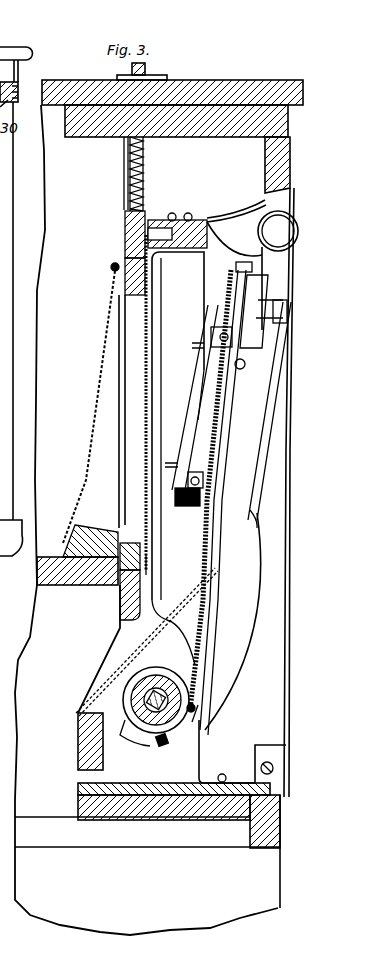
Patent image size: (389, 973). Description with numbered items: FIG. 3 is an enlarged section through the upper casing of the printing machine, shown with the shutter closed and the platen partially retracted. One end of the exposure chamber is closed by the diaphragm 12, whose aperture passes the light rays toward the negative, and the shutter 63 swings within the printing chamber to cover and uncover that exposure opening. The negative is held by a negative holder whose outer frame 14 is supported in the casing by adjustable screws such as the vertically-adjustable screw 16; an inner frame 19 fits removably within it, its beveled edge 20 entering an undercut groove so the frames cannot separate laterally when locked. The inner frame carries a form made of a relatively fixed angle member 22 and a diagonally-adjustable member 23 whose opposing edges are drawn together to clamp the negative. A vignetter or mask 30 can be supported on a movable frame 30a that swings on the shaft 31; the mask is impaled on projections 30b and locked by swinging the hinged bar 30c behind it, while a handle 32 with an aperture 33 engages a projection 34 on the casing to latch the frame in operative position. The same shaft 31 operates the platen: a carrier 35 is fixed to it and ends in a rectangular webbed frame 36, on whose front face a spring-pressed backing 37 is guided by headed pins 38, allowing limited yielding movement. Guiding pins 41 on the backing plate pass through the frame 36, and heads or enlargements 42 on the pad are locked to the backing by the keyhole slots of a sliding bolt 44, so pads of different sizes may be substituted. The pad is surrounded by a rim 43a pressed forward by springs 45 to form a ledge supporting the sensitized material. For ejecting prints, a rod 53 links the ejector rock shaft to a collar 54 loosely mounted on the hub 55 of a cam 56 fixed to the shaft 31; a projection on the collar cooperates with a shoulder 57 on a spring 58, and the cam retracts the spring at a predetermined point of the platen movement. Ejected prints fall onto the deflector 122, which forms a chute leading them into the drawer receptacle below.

The diaphragm 12 is at (125, 182).
The outer frame 14 is at (127, 229).
The vertically-adjustable screw 16 is at (143, 163).
The inner frame 19 is at (112, 268).
The beveled edge 20 is at (120, 594).
The relatively fixed angle member 22 is at (150, 558).
The diagonally-adjustable member 23 is at (120, 289).
The vignetter or mask 30 is at (144, 318).
The movable frame 30a is at (178, 458).
The projections 30b is at (172, 232).
The hinged bar 30c is at (165, 240).
The shaft 31 is at (150, 737).
The handle 32 is at (250, 214).
The aperture 33 is at (234, 238).
The projection 34 is at (278, 231).
The carrier 35 is at (233, 621).
The rectangular webbed frame 36 is at (269, 411).
The spring-pressed backing 37 is at (254, 311).
The headed pins 38 is at (258, 522).
The guiding pins 41 is at (262, 432).
The heads or enlargements 42 is at (236, 366).
The rim 43a is at (193, 442).
The sliding bolt 44 is at (226, 498).
The springs 45 is at (197, 366).
The rod 53 is at (206, 645).
The collar 54 is at (166, 680).
The hub 55 is at (156, 688).
The cam 56 is at (200, 700).
The shoulder 57 is at (203, 714).
The spring 58 is at (242, 751).
The shutter 63 is at (95, 440).
The deflector 122 is at (187, 596).